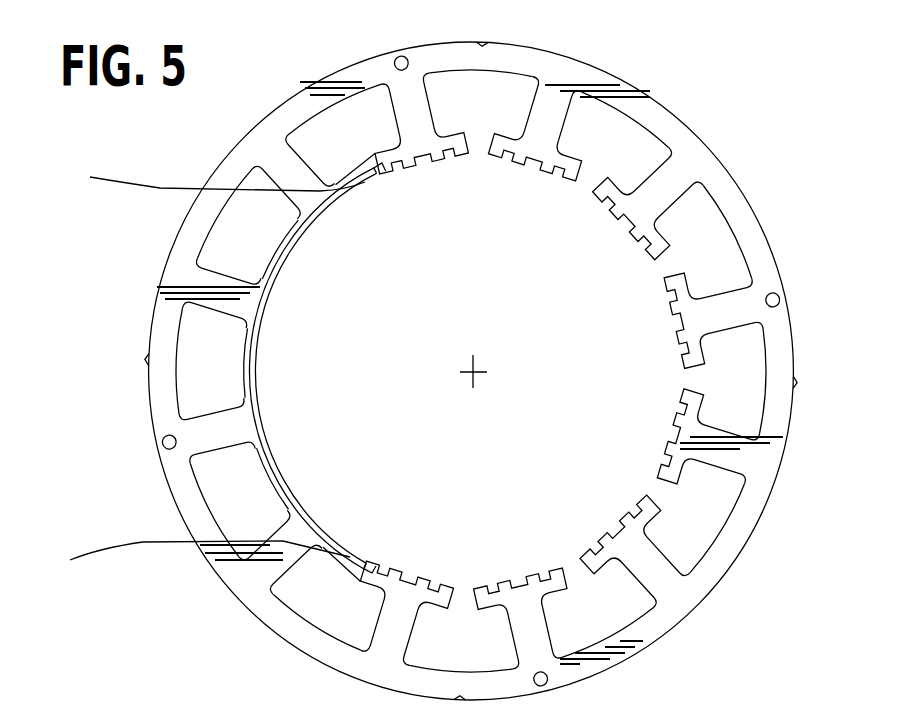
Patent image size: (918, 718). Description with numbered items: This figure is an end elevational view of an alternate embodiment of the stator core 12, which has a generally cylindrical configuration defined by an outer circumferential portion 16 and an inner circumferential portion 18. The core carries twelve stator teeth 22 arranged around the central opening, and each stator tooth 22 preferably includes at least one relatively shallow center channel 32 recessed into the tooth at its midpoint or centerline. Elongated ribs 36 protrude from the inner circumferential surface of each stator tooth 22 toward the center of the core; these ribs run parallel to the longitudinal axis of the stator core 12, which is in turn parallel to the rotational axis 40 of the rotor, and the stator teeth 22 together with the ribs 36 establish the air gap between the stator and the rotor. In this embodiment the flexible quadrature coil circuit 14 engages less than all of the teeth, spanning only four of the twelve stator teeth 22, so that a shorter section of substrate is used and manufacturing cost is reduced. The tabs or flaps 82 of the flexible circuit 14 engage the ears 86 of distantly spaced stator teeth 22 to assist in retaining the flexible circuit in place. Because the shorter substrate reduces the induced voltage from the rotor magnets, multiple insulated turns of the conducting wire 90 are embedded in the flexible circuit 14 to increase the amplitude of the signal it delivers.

The stator core 12 is at (656, 110).
The flexible quadrature coil circuit 14 is at (345, 197).
The outer circumferential portion 16 is at (511, 370).
The inner circumferential portion 18 is at (590, 480).
The stator tooth 22 is at (543, 122).
The center channel 32 is at (688, 327).
The elongated ribs 36 is at (658, 452).
The rotational axis 40 is at (480, 367).
The tabs or flaps 82 is at (352, 174).
The ears 86 is at (330, 182).
The conducting wire 90 is at (160, 188).